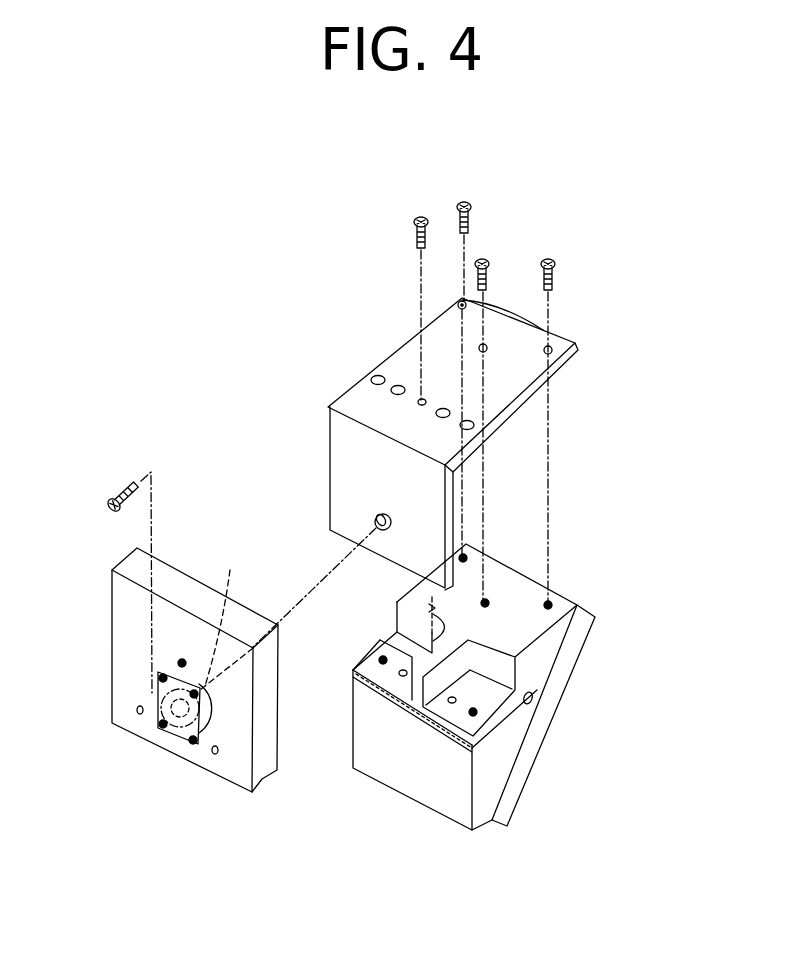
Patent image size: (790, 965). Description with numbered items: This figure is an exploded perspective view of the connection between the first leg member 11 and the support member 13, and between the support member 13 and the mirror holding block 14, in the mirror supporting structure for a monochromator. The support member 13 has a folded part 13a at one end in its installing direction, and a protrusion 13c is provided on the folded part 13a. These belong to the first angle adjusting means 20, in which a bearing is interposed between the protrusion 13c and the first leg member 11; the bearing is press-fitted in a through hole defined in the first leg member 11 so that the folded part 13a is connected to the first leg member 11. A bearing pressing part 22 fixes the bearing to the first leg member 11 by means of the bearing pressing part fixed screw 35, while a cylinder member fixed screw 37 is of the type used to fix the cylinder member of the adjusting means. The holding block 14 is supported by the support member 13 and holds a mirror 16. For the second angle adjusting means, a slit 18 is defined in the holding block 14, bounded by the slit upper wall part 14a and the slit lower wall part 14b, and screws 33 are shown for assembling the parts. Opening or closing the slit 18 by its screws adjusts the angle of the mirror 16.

The first leg member 11 is at (125, 605).
The support member 13 is at (353, 398).
The folded part 13a is at (347, 465).
The protrusion 13c is at (385, 505).
The holding block 14 is at (557, 592).
The slit upper wall part 14a is at (353, 670).
The slit lower wall part 14b is at (368, 727).
The mirror 16 is at (548, 727).
The slit 18 is at (537, 697).
The first angle adjusting means 20 is at (127, 772).
The bearing pressing part 22 is at (177, 745).
The screws 33 is at (424, 214).
The bearing pressing part fixed screw 35 is at (158, 725).
The cylinder member fixed screw 37 is at (117, 478).